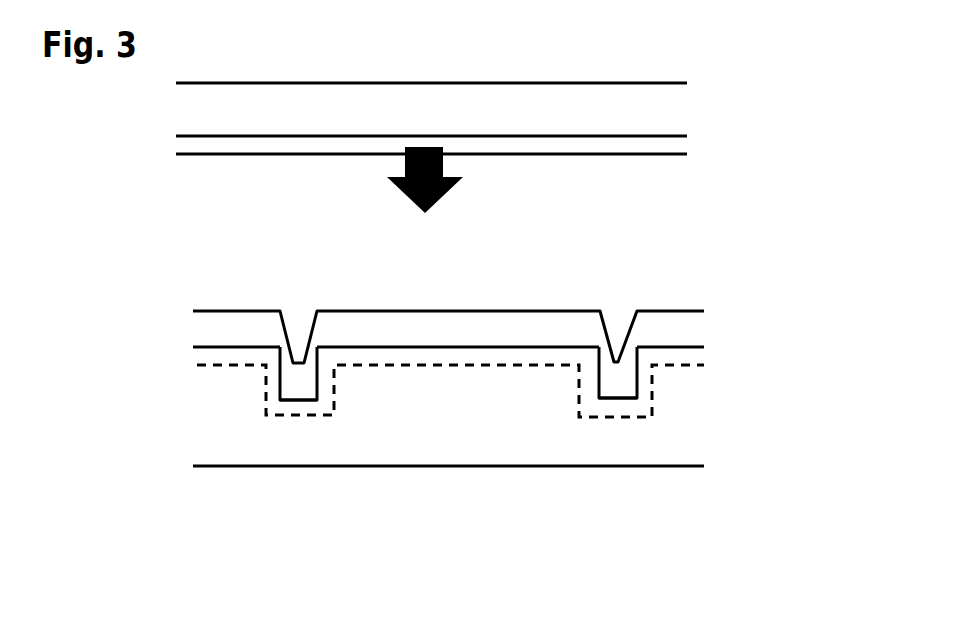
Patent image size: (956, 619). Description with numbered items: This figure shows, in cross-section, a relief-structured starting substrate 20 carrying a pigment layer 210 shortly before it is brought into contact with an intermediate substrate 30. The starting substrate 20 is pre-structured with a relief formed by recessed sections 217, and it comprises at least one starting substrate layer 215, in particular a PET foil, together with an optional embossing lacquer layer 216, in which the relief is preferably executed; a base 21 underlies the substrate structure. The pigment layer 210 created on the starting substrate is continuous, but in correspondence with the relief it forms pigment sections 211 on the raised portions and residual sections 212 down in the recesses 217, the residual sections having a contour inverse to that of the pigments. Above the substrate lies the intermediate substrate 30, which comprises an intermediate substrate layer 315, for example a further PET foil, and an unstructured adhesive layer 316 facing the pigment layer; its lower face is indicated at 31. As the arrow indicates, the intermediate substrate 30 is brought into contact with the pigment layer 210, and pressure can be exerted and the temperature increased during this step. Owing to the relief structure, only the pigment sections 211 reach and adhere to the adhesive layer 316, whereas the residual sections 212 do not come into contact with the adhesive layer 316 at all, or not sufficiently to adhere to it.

The starting substrate 20 is at (90, 363).
The base substrate 21 is at (212, 488).
The intermediate substrate 30 is at (810, 92).
The bottom surface of film stack 31 is at (196, 166).
The pigment layer 210 is at (192, 329).
The pigment sections 211 is at (238, 325).
The residual sections 212 is at (295, 382).
The starting substrate layer 215 is at (211, 419).
The embossing lacquer layer 216 is at (205, 360).
The recessed sections 217 is at (300, 400).
The intermediate substrate layer 315 is at (687, 116).
The unstructured adhesive layer 316 is at (687, 147).